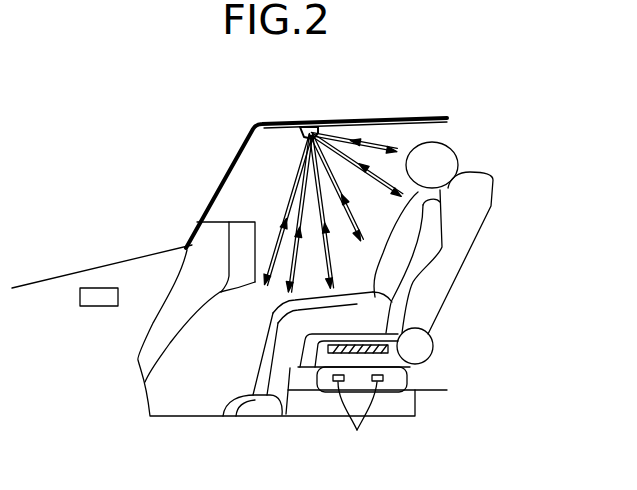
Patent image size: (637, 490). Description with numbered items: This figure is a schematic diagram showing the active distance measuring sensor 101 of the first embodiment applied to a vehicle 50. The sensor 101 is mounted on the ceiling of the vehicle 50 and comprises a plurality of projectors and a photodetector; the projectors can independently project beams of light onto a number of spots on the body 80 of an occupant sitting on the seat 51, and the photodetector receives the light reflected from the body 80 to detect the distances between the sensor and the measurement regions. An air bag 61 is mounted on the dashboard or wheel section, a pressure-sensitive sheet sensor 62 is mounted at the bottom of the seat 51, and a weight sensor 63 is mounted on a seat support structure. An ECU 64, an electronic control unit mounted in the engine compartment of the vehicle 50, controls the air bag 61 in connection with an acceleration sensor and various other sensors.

The vehicle 50 is at (68, 273).
The seat 51 is at (452, 305).
The air bag 61 is at (238, 250).
The pressure-sensitive sheet sensor 62 is at (388, 350).
The weight sensor 63 is at (358, 421).
The ECU 64 is at (97, 307).
The body of an occupant 80 is at (452, 153).
The active distance measuring sensor 101 is at (309, 126).